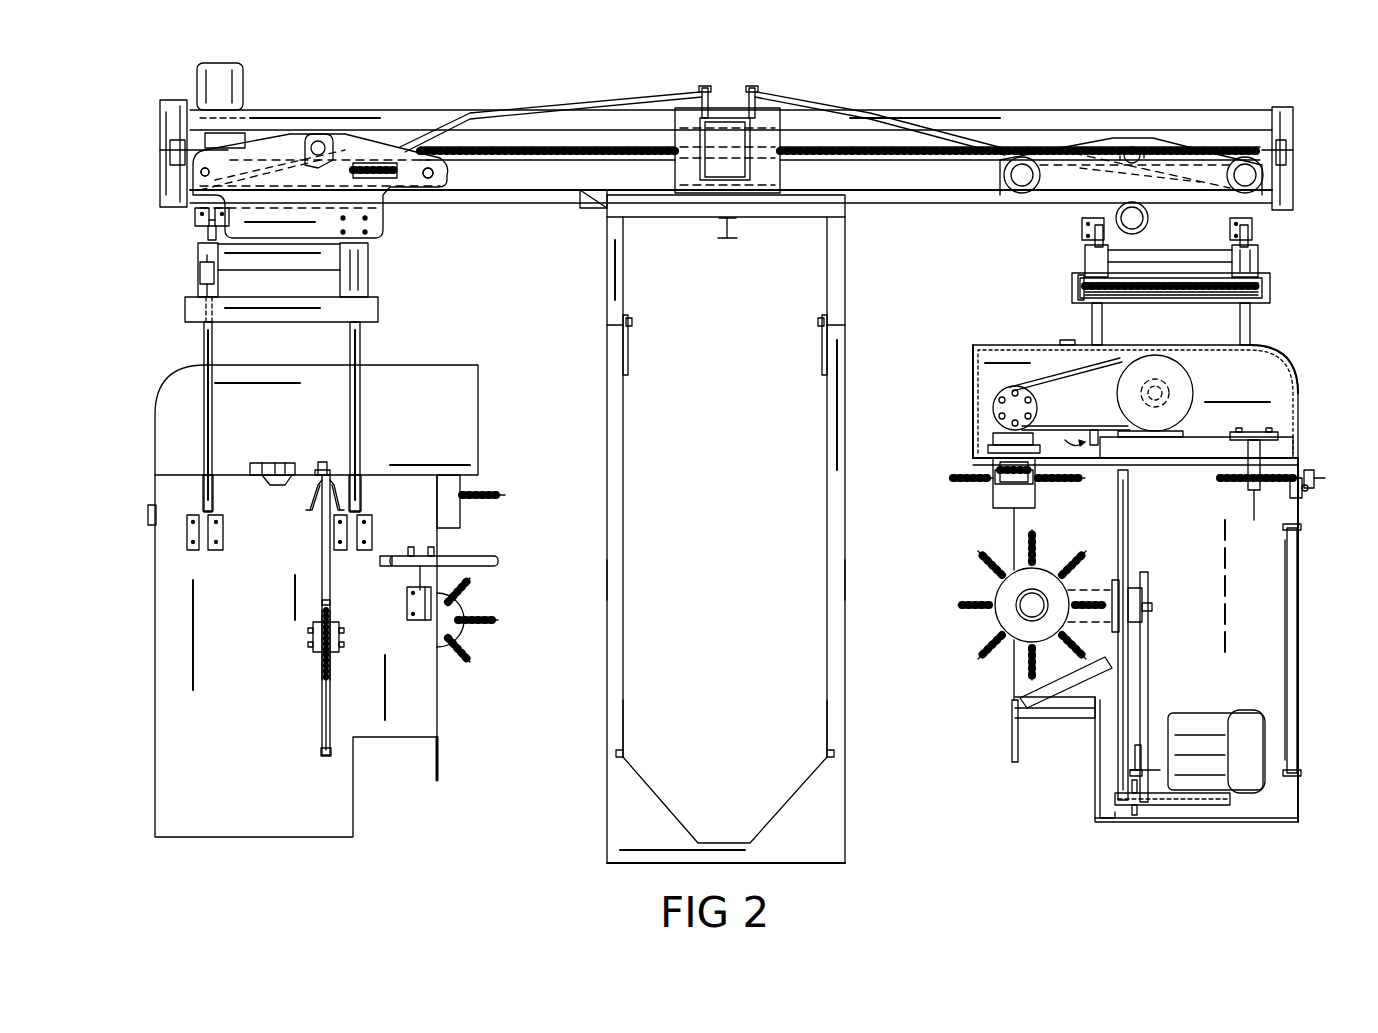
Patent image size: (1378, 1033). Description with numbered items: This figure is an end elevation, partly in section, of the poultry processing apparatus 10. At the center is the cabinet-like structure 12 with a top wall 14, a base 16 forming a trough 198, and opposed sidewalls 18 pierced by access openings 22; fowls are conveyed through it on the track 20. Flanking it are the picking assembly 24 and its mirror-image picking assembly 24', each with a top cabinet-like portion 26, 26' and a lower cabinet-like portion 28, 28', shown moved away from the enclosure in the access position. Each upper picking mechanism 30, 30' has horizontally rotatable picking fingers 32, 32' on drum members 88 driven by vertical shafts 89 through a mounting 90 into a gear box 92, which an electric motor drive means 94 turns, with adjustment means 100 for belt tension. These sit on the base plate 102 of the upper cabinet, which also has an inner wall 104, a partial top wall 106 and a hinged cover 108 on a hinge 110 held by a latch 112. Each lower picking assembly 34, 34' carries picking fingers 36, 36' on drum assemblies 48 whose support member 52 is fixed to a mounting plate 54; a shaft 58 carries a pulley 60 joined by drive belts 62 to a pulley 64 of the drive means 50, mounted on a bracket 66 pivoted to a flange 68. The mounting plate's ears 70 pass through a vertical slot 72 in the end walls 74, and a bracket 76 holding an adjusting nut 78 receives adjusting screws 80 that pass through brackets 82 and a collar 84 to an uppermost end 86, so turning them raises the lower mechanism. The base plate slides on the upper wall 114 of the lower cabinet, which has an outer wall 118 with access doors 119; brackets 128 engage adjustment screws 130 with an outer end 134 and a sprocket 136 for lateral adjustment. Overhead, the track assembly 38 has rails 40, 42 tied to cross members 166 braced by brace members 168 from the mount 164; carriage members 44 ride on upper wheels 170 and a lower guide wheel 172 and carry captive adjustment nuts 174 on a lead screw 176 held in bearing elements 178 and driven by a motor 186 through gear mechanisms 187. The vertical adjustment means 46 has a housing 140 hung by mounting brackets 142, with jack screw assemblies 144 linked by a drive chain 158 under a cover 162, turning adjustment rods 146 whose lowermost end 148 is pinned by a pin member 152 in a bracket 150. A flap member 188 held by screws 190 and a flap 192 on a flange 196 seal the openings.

The poultry processing apparatus 10 is at (918, 105).
The cabinet-like structure 12 is at (838, 262).
The top wall 14 is at (646, 205).
The base 16 is at (648, 806).
The sidewalls 18 is at (605, 572).
The track 20 is at (728, 238).
The access openings 22 is at (612, 492).
The picking assembly 24 is at (1196, 772).
The picking assembly 24' is at (376, 830).
The top cabinet-like portion 26 is at (1160, 401).
The top cabinet-like portion 26' is at (293, 420).
The lower cabinet-like portion 28 is at (1317, 640).
The lower cabinet-like portion 28' is at (262, 656).
The upper picking mechanism 30 is at (932, 439).
The upper picking mechanism 30' is at (489, 485).
The picking fingers 32 is at (993, 489).
The picking fingers 32' is at (510, 495).
The lower picking assembly 34 is at (982, 676).
The lower picking assembly 34' is at (456, 604).
The picking fingers 36 is at (1013, 600).
The picking fingers 36' is at (502, 627).
The overhead track assembly 38 is at (1298, 116).
The rail member 40 is at (1050, 118).
The lower rail 42 is at (930, 204).
The carriage members 44 is at (285, 138).
The vertical adjustment means 46 is at (196, 272).
The drum assemblies 48 is at (1040, 575).
The drive means 50 is at (1196, 713).
The support member 52 is at (1125, 598).
The mounting plate 54 is at (1130, 538).
The shaft 58 is at (1152, 607).
The pulley 60 is at (1142, 594).
The drive belts 62 is at (1148, 642).
The pulley 64 is at (1135, 752).
The bracket 66 is at (1218, 806).
The flange 68 is at (1136, 815).
The ears 70 is at (322, 704).
The vertical slot 72 is at (322, 758).
The end walls 74 is at (199, 710).
The bracket 76 is at (313, 637).
The adjusting nut 78 is at (339, 638).
The adjusting screws 80 is at (330, 578).
The brackets 82 is at (312, 490).
The collar or bearing 84 is at (318, 470).
The uppermost end 86 is at (323, 462).
The drum members 88 is at (1000, 500).
The vertical shafts 89 is at (993, 468).
The mounting 90 is at (995, 438).
The gear box 92 is at (998, 398).
The drive means 94 is at (1180, 385).
The adjustment means 100 is at (1067, 436).
The base plate 102 is at (1190, 455).
The inner wall 104 is at (973, 400).
The partial top wall 106 is at (990, 345).
The hinged cover 108 is at (1285, 370).
The hinge 110 is at (1068, 340).
The latch 112 is at (1300, 440).
The upper wall 114 is at (1172, 466).
The outer wall 118 is at (1298, 566).
The access doors 119 is at (1285, 626).
The brackets 128 is at (1261, 512).
The adjustment screws 130 is at (1242, 482).
The outer end 134 is at (148, 515).
The sprocket 136 is at (1302, 492).
The housing 140 is at (345, 252).
The mounting brackets 142 is at (195, 230).
The jack screw assemblies 144 is at (368, 278).
The adjustment rod 146 is at (204, 343).
The lowermost end 148 is at (203, 492).
The bracket 150 is at (190, 548).
The pin member 152 is at (222, 535).
The drive chain 158 is at (1162, 295).
The cover 162 is at (368, 316).
The mount 164 is at (728, 108).
The cross members 166 is at (168, 100).
The brace members 168 is at (648, 98).
The upper wheels 170 is at (435, 173).
The lower guide wheel 172 is at (1148, 221).
The captive adjustment nut 174 is at (1134, 145).
The lead screw 176 is at (610, 162).
The bearing elements 178 is at (172, 146).
The motor 186 is at (236, 72).
The gear mechanisms 187 is at (232, 133).
The flap member 188 is at (630, 350).
The screws 190 is at (632, 320).
The flap 192 is at (1018, 752).
The flange 196 is at (1060, 690).
The trough 198 is at (1070, 392).